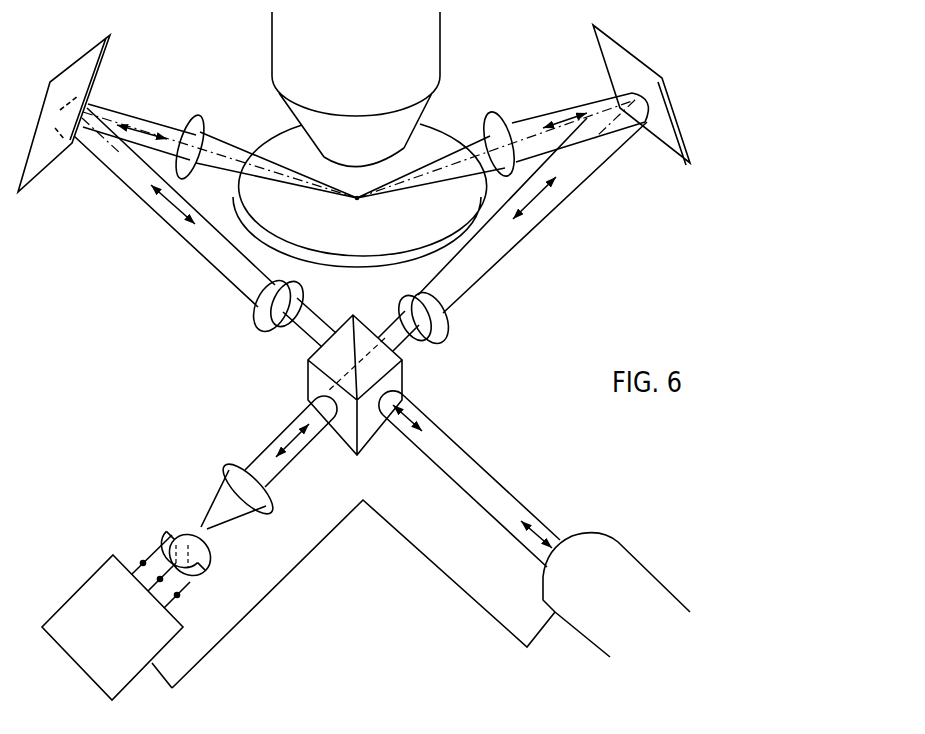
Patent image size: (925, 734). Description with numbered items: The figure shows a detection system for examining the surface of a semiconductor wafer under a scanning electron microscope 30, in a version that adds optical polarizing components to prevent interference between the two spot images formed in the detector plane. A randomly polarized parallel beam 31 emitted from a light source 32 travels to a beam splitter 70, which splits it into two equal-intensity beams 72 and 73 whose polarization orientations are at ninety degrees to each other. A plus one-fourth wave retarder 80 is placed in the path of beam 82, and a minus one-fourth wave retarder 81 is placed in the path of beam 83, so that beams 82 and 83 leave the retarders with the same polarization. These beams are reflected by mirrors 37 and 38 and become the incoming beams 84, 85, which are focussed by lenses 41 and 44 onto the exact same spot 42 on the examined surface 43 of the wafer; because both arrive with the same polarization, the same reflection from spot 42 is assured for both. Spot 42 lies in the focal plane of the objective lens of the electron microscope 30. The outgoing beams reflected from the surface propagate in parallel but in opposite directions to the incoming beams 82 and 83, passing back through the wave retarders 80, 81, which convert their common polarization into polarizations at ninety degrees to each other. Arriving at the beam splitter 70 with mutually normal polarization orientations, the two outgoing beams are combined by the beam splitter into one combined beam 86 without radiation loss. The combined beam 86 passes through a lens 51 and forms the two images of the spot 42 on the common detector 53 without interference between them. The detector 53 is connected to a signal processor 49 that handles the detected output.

The scanning electron microscope 30 is at (430, 62).
The parallel beam 31 is at (490, 468).
The light source 32 is at (652, 600).
The mirror 37 is at (620, 63).
The mirror 38 is at (109, 45).
The lens 41 is at (490, 124).
The spot 42 is at (357, 199).
The examined surface 43 is at (358, 243).
The lens 44 is at (195, 125).
The signal processor 49 is at (87, 583).
The lens 51 is at (232, 482).
The common detector 53 is at (212, 557).
The beam splitter 70 is at (371, 428).
The beam 72 is at (400, 344).
The beam 73 is at (305, 336).
The plus one-fourth wave retarder 80 is at (443, 323).
The minus one-fourth wave retarder 81 is at (262, 325).
The beam 82 is at (506, 233).
The beam 83 is at (215, 250).
The incoming beam 84 is at (537, 120).
The incoming beam 85 is at (138, 127).
The combined beam 86 is at (296, 447).